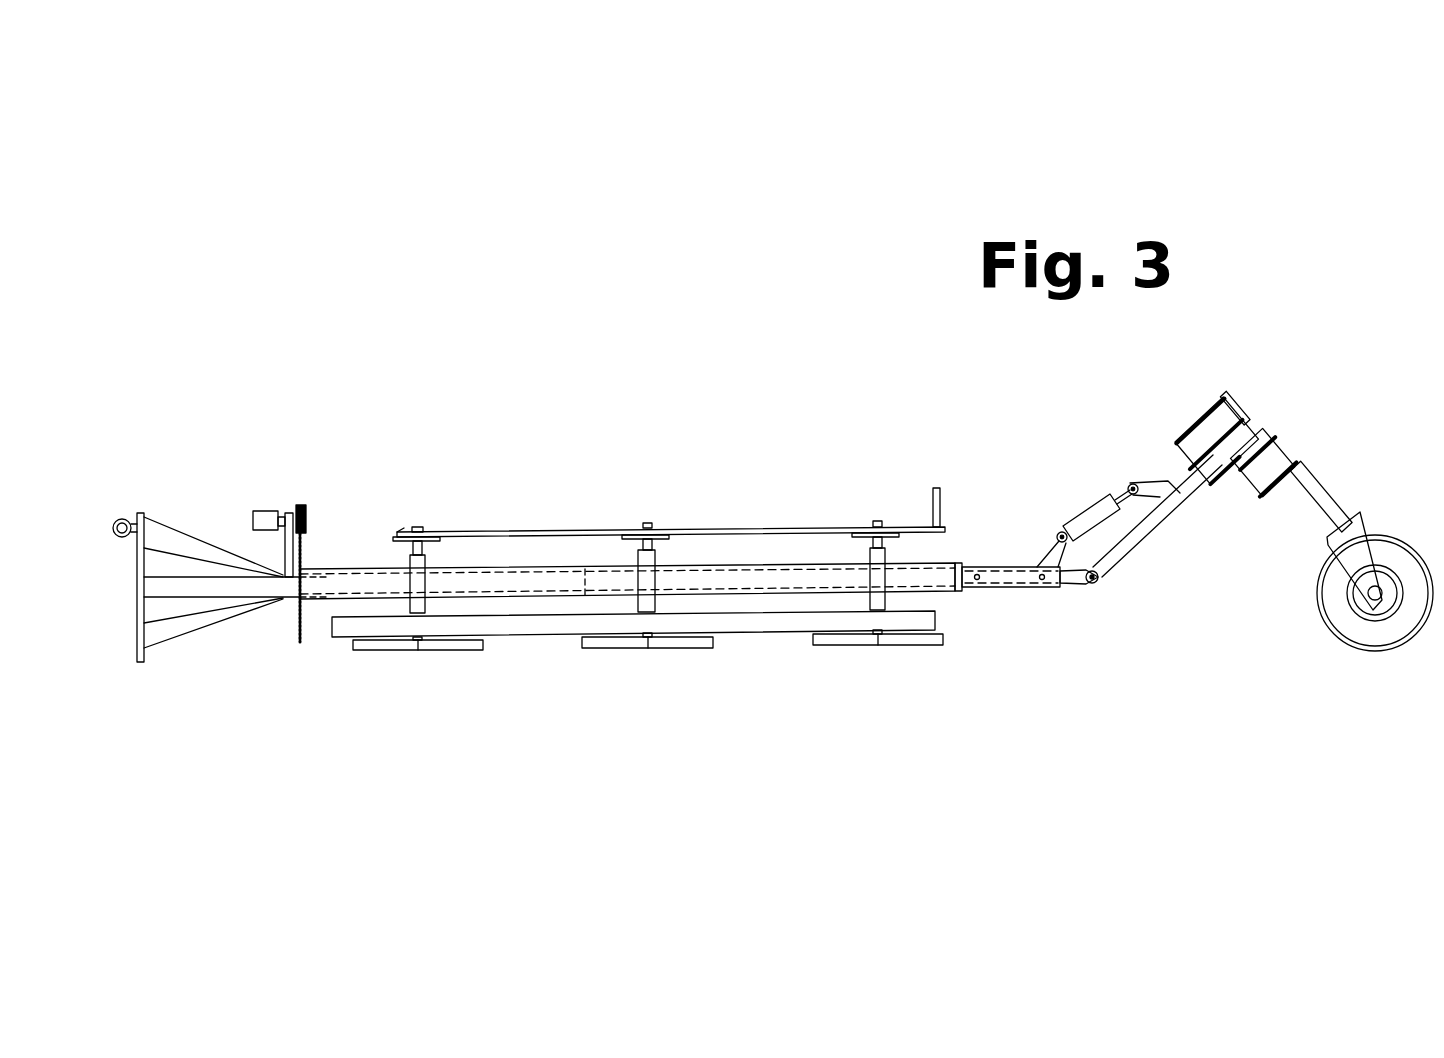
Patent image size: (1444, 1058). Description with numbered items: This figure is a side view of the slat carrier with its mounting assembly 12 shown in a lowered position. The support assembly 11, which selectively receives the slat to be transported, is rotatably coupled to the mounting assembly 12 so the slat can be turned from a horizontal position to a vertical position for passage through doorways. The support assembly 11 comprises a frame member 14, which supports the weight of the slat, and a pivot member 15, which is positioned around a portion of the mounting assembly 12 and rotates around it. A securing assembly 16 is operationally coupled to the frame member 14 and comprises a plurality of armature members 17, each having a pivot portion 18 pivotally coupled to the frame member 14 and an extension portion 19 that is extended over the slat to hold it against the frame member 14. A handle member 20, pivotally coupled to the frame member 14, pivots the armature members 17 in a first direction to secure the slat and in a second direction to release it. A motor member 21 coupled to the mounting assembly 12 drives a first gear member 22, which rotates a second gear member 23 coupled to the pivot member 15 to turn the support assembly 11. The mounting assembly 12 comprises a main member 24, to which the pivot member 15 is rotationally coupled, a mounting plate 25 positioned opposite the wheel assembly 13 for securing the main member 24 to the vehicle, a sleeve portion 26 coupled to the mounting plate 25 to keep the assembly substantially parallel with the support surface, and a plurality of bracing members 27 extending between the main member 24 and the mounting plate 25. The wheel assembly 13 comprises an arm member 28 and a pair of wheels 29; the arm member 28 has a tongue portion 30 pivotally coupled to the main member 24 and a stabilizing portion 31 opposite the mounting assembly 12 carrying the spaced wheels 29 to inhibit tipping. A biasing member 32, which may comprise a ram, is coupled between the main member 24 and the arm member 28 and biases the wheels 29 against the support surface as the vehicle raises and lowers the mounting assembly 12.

The support assembly 11 is at (705, 468).
The mounting assembly 12 is at (205, 568).
The wheel assembly 13 is at (1304, 470).
The frame member 14 is at (521, 625).
The pivot member 15 is at (538, 583).
The securing assembly 16 is at (907, 527).
The armature members 17 is at (885, 545).
The pivot portion 18 is at (884, 648).
The extension portion 19 is at (822, 648).
The handle member 20 is at (944, 500).
The motor member 21 is at (260, 511).
The first gear member 22 is at (299, 503).
The second gear member 23 is at (300, 645).
The main member 24 is at (190, 598).
The mounting plate 25 is at (136, 592).
The sleeve portion 26 is at (114, 520).
The bracing members 27 is at (178, 530).
The arm member 28 is at (1180, 510).
The wheels 29 is at (1378, 633).
The tongue portion 30 is at (1147, 525).
The stabilizing portion 31 is at (1300, 497).
The biasing member 32 is at (1125, 441).